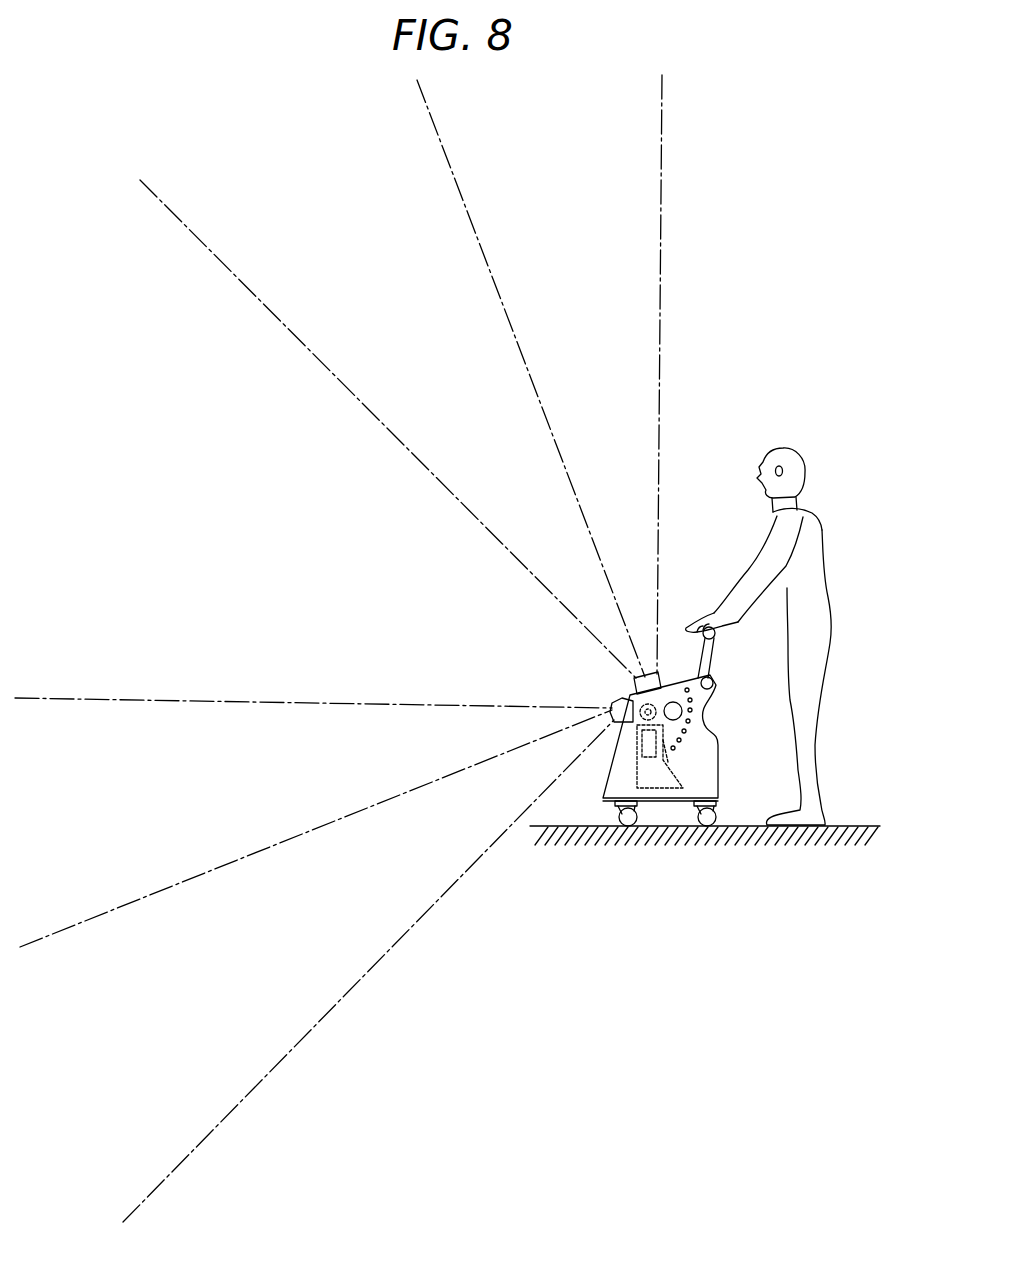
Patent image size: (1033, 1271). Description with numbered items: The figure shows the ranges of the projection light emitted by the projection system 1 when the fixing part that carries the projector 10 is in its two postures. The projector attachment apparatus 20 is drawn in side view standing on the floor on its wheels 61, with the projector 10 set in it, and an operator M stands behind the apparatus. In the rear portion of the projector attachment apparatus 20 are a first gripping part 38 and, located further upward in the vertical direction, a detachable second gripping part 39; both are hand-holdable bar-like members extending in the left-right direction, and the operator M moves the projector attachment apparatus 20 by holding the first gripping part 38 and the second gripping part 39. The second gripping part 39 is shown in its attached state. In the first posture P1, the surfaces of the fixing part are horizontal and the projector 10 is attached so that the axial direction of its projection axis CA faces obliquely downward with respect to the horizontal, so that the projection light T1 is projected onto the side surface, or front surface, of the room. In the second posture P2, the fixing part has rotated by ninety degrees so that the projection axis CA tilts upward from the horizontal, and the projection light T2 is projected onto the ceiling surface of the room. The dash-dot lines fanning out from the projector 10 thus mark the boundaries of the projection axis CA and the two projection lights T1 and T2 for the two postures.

The projection system 1 is at (735, 625).
The projector 10 is at (620, 684).
The projector attachment apparatus 20 is at (730, 775).
The first gripping part 38 is at (712, 690).
The second gripping part 39 is at (712, 641).
The caster wheels 61 is at (705, 828).
The first posture P1 is at (614, 735).
The second posture P2 is at (626, 676).
The projection light T1 is at (172, 697).
The projection light T2 is at (663, 120).
The projection axis CA is at (455, 172).
The operator M is at (820, 548).